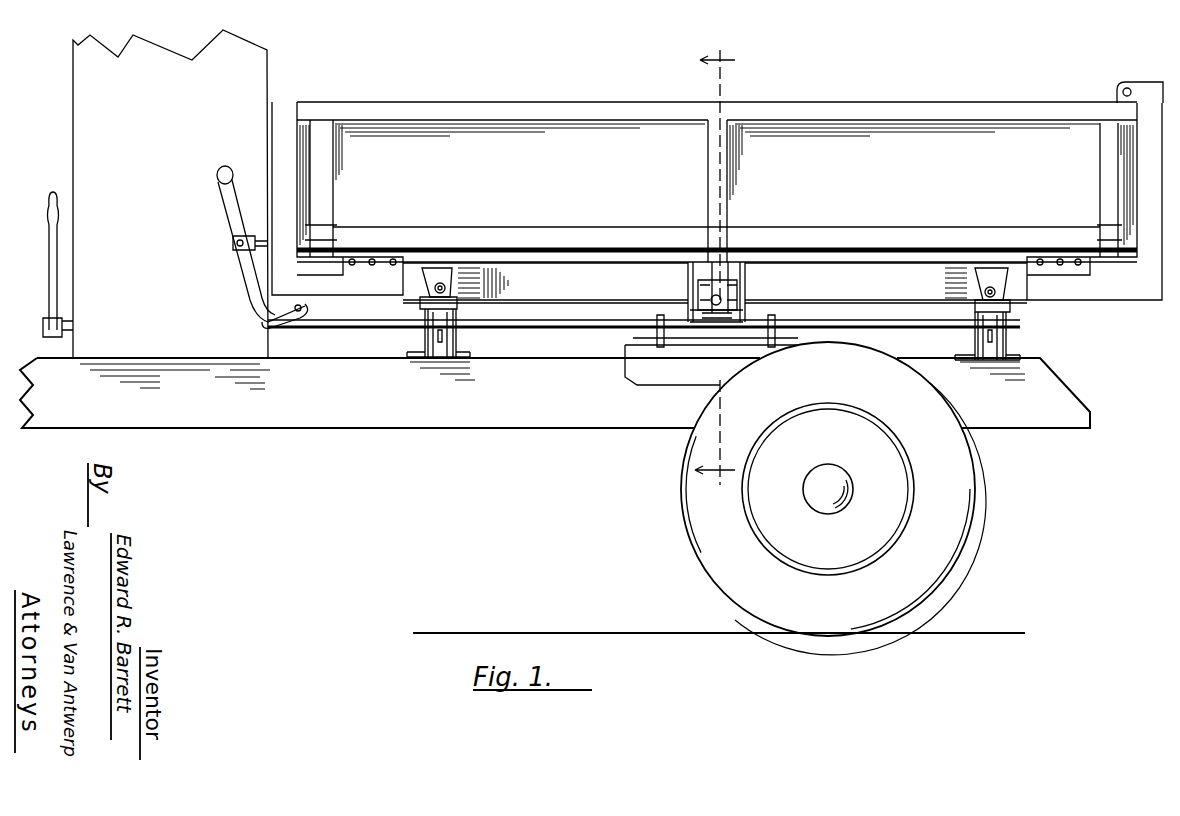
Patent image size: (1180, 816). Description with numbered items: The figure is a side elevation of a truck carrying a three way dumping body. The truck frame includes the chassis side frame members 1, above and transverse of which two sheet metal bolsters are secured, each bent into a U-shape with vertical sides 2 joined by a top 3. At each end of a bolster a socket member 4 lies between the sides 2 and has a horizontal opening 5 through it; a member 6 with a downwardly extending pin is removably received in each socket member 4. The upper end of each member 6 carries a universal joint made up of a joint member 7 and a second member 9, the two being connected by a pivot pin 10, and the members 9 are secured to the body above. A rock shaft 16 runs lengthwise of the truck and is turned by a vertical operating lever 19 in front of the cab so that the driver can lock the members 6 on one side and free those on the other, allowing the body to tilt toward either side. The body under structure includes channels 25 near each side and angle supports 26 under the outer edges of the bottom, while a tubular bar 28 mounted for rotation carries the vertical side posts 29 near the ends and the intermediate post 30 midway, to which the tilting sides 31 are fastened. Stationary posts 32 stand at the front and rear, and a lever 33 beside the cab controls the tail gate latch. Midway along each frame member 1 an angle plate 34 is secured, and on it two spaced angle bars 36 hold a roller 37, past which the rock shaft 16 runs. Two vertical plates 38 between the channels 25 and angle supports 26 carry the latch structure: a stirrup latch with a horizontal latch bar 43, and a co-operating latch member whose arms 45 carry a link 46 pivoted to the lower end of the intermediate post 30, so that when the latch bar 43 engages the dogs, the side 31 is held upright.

The chassis side frame member 1 is at (500, 420).
The bolster side 2 is at (425, 337).
The bolster top 3 is at (718, 259).
The socket member 4 is at (440, 345).
The horizontal opening 5 is at (445, 340).
The pin member 6 is at (420, 304).
The joint member 7 is at (495, 287).
The universal joint member 9 is at (440, 272).
The pivot pin 10 is at (452, 297).
The rock shaft 16 is at (63, 322).
The operating lever 19 is at (57, 258).
The channel 25 is at (547, 292).
The angle support 26 is at (630, 262).
The tubular bar 28 is at (577, 236).
The side post 29 is at (328, 199).
The intermediate post 30 is at (720, 198).
The body side 31 is at (633, 137).
The stationary post 32 is at (288, 195).
The latch lever 33 is at (245, 257).
The angle plate 34 is at (687, 367).
The angle bar 36 is at (662, 348).
The roller 37 is at (715, 327).
The vertical plate 38 is at (688, 284).
The latch bar 43 is at (697, 263).
The latch arm 45 is at (703, 327).
The link 46 is at (733, 260).